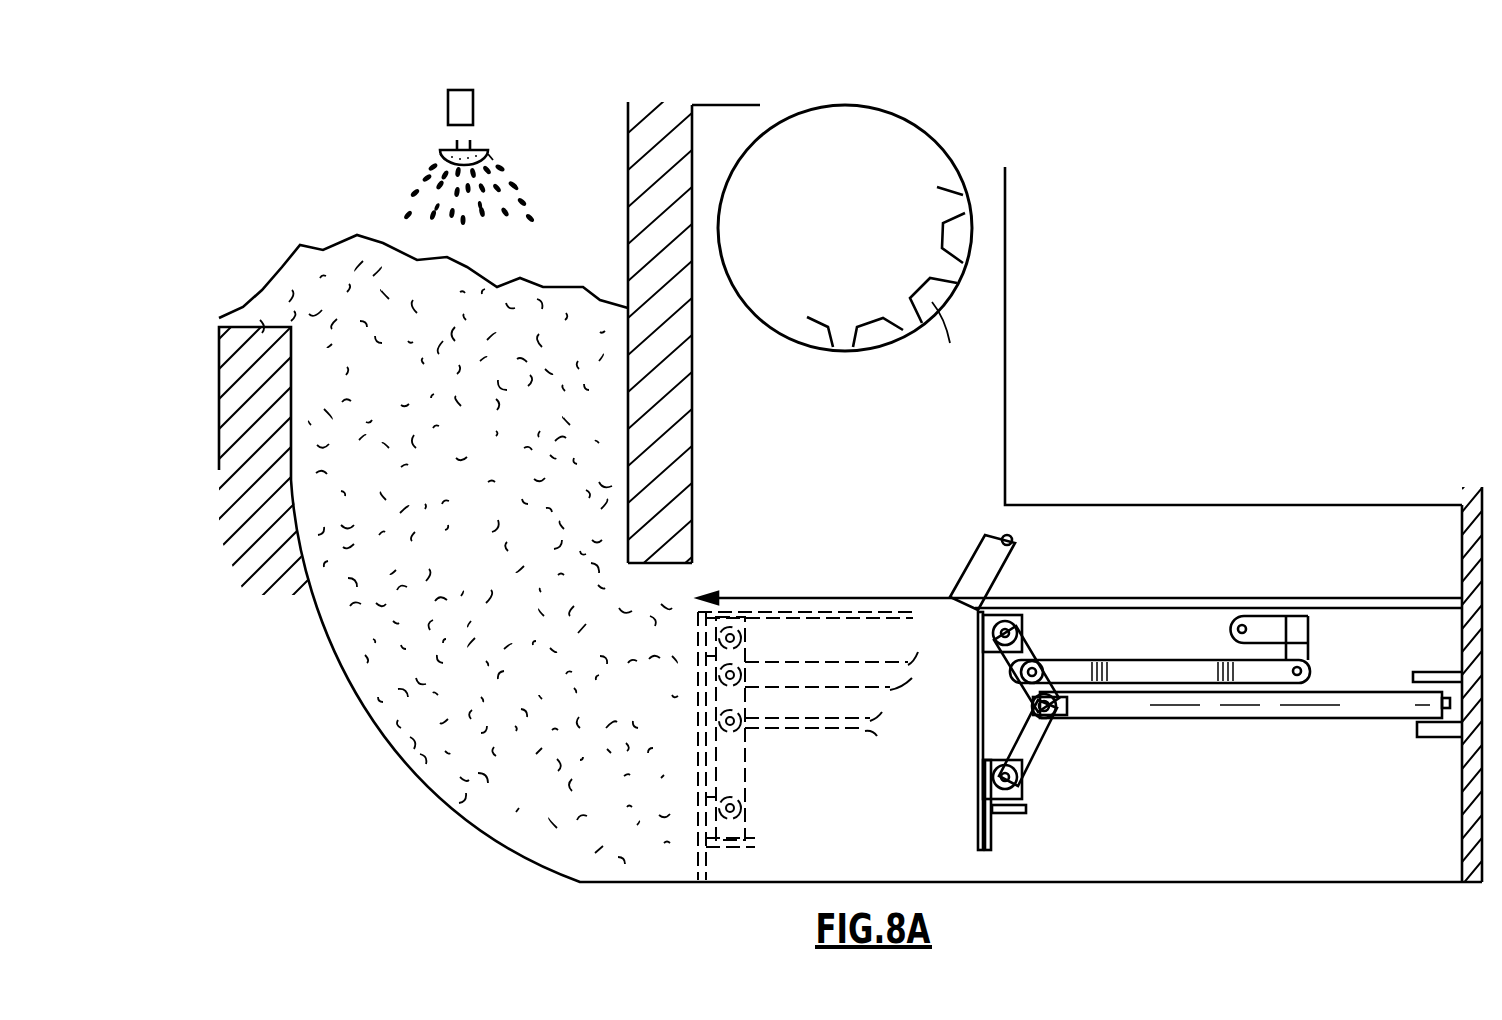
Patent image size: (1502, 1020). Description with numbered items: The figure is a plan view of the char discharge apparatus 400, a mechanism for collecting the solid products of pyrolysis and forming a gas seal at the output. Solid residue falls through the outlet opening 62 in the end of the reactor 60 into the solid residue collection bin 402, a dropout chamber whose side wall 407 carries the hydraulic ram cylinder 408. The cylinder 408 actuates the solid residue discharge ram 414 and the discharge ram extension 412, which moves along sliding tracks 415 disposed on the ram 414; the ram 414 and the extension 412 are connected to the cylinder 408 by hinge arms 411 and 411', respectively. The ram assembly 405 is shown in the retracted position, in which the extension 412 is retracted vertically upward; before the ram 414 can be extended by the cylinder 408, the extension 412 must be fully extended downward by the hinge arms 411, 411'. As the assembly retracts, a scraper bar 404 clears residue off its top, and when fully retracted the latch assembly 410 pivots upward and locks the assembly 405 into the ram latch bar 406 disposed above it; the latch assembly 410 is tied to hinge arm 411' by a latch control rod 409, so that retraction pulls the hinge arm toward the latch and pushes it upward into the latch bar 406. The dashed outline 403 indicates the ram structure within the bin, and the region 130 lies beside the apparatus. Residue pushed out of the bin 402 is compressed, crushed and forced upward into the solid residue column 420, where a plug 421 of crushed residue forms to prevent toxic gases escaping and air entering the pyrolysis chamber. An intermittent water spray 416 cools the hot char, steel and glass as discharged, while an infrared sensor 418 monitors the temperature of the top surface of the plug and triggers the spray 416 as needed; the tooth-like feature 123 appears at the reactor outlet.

The screen 130 is at (125, 434).
The solid residue column 420 is at (362, 462).
The plug of crushed solid residue 421 is at (413, 724).
The solid residue collection bin 402 is at (825, 843).
The discharge apparatus 400 is at (1286, 279).
The side wall 407 is at (1467, 790).
The infrared sensor 418 is at (466, 110).
The water spray 416 is at (452, 143).
The reactor 60 is at (878, 112).
The outlet opening 62 is at (882, 207).
The tooth 123 is at (875, 333).
The ram latch bar 406 is at (1236, 598).
The pusher plate 403 is at (800, 598).
The scraper bar 404 is at (982, 560).
The ram assembly 405 is at (1112, 636).
The solid residue discharge ram 414 is at (978, 706).
The sliding tracks 415 is at (985, 790).
The discharge ram extension 412 is at (1028, 800).
The hinge arm 411' is at (1052, 656).
The hinge arm 411 is at (1044, 740).
The latch control rod 409 is at (1200, 662).
The latch assembly 410 is at (1302, 640).
The hydraulic ram cylinder 408 is at (1251, 704).